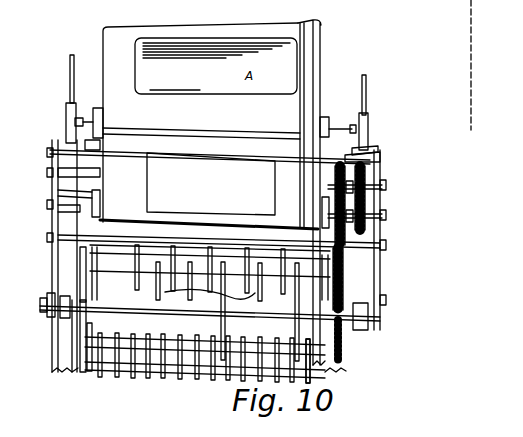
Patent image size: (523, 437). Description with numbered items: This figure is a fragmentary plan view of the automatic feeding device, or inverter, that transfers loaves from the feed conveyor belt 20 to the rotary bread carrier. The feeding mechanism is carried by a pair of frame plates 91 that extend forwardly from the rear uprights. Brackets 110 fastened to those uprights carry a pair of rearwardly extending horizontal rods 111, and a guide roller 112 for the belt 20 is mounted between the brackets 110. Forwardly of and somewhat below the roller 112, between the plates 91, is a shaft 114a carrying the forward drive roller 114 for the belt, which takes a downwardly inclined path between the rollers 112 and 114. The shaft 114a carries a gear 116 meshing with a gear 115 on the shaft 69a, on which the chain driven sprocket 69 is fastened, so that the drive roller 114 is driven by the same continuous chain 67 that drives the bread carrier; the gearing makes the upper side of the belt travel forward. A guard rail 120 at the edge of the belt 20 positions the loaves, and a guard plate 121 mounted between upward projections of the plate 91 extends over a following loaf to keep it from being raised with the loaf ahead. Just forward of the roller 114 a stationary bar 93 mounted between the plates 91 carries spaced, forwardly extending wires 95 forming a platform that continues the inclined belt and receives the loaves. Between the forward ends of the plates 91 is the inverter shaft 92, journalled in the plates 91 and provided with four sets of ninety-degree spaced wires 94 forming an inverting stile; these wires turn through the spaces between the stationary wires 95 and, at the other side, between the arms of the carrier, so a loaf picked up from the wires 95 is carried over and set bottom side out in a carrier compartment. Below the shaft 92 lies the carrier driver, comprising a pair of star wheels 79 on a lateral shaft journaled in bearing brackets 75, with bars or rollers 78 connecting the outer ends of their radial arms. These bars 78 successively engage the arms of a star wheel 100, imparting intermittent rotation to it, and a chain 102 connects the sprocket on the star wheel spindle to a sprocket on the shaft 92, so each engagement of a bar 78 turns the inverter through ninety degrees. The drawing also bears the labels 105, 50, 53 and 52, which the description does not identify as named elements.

The feed conveyor belt 20 is at (209, 126).
The indicator panel 105 is at (216, 66).
The guard rail 120 is at (322, 46).
The guide roller 112 is at (326, 115).
The horizontal rods 111 is at (70, 62).
The brackets 110 is at (66, 126).
The chain driven sprocket 69 is at (358, 152).
The gear 115 is at (366, 158).
The gear 116 is at (358, 228).
The continuous chain 67 is at (343, 270).
The frame plates 91 is at (52, 284).
The shaft 69a is at (48, 172).
The forward drive roller 114 is at (92, 193).
The shaft 114a is at (70, 208).
The stationary bar 93 is at (60, 240).
The star wheels 79 is at (82, 265).
The bars or rollers 78 is at (123, 254).
The pins or wires 94 is at (190, 323).
The pins or wires 95 is at (210, 297).
The lower bar 50 is at (248, 378).
The support 53 is at (90, 372).
The pin 52 is at (309, 370).
The shaft 92 is at (40, 306).
The bearing brackets 75 is at (60, 301).
The chain 102 is at (67, 322).
The star wheel 100 is at (88, 328).
The guard plate 121 is at (211, 184).